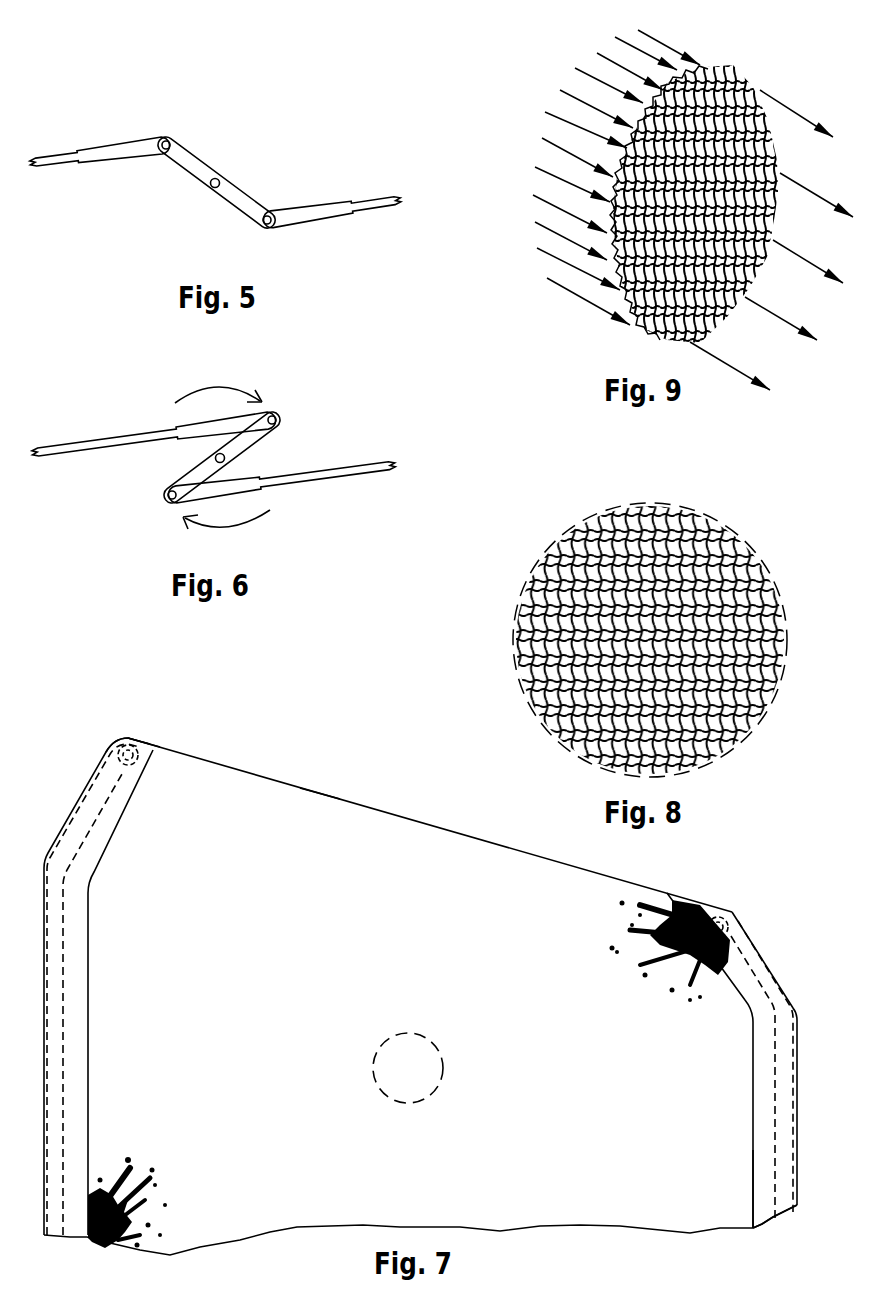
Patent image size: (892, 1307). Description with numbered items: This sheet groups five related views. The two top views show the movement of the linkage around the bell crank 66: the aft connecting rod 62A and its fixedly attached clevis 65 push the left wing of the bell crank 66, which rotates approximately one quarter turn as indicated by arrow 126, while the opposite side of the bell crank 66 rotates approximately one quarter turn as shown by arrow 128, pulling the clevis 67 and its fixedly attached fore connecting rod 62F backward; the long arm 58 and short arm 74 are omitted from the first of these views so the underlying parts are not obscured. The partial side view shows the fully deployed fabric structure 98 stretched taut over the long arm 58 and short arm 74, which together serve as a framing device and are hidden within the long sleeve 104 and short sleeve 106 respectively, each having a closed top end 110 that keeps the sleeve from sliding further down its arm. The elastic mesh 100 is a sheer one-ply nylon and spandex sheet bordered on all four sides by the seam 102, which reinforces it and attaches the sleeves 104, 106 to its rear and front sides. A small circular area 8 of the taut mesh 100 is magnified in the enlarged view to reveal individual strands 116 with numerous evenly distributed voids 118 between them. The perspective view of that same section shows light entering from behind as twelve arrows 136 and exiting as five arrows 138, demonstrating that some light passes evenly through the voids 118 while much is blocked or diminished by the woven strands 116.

In FIG. 5, the aft connecting rod 62A is at (45, 165).
In FIG. 6, the aft connecting rod 62A is at (61, 453).
In FIG. 5, the fore connecting rod 62F is at (377, 211).
In FIG. 6, the fore connecting rod 62F is at (372, 471).
In FIG. 5, the clevis 65 is at (172, 134).
In FIG. 6, the clevis 65 is at (287, 414).
In FIG. 5, the bell crank 66 is at (221, 167).
In FIG. 6, the bell crank 66 is at (257, 438).
In FIG. 5, the clevis 67 is at (254, 229).
In FIG. 6, the clevis 67 is at (161, 496).
In FIG. 6, the arrow 126 is at (211, 387).
In FIG. 6, the arrow 128 is at (233, 530).
In FIG. 7, the long arm 58 is at (88, 800).
In FIG. 7, the short arm 74 is at (765, 988).
In FIG. 7, the fabric structure 98 is at (393, 746).
In FIG. 7, the elastic mesh 100 is at (468, 847).
In FIG. 7, the seam 102 is at (107, 847).
In FIG. 7, the long sleeve 104 is at (153, 750).
In FIG. 7, the short sleeve 106 is at (768, 1210).
In FIG. 7, the closed top end 110 is at (136, 737).
In FIG. 7, the small circular area 8 is at (385, 1046).
In FIG. 9, the strands 116 is at (733, 75).
In FIG. 8, the strands 116 is at (775, 582).
In FIG. 9, the voids 118 is at (750, 100).
In FIG. 8, the voids 118 is at (773, 684).
In FIG. 9, the arrows 136 is at (617, 179).
In FIG. 9, the arrows 138 is at (797, 262).